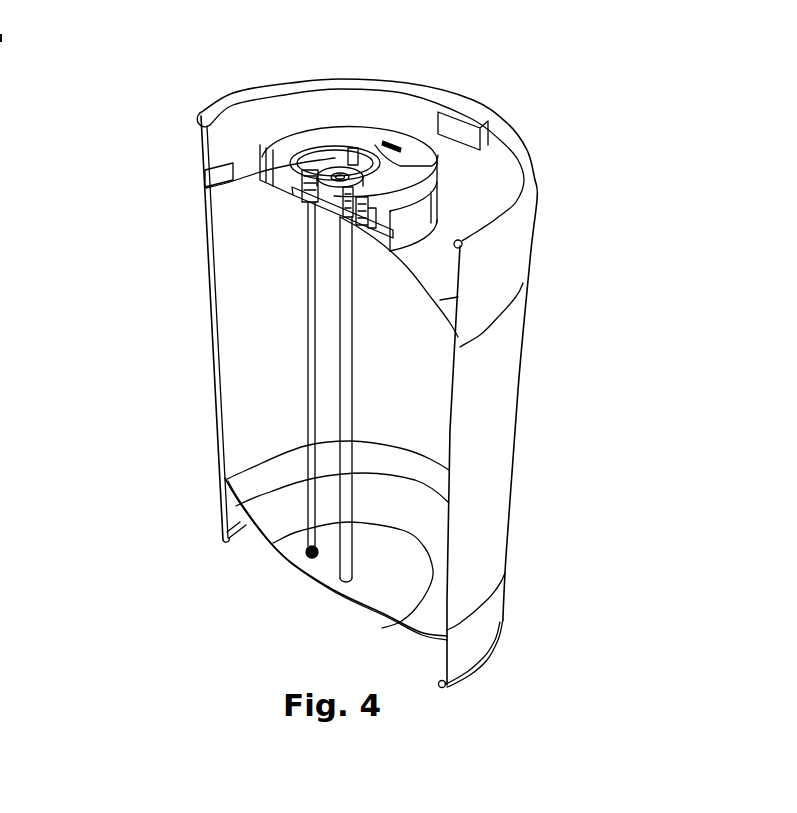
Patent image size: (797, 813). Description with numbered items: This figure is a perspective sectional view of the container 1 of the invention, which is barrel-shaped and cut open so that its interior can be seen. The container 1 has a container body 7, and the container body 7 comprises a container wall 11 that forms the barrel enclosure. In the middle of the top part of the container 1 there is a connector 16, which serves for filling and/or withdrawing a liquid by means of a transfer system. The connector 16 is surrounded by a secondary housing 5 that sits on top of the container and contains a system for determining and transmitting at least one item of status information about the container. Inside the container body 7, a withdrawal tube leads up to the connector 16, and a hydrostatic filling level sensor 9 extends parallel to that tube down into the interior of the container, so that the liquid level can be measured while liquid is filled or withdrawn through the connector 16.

The container 1 is at (193, 307).
The secondary housing 5 is at (417, 163).
The container body 7 is at (221, 451).
The hydrostatic filling level sensor 9 is at (303, 412).
The container wall 11 is at (233, 245).
The connector 16 is at (330, 172).